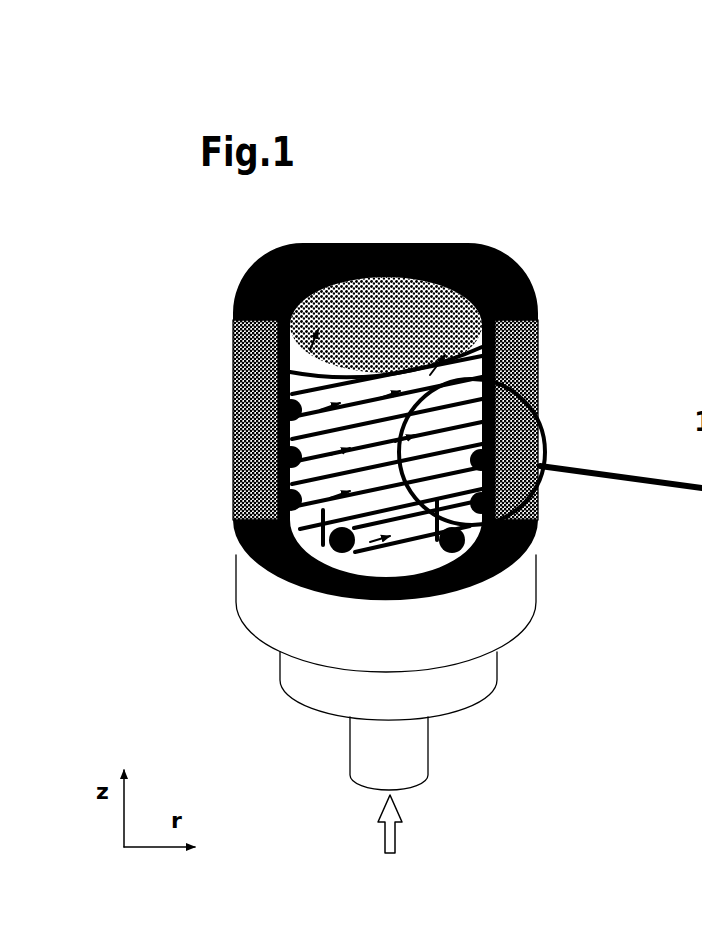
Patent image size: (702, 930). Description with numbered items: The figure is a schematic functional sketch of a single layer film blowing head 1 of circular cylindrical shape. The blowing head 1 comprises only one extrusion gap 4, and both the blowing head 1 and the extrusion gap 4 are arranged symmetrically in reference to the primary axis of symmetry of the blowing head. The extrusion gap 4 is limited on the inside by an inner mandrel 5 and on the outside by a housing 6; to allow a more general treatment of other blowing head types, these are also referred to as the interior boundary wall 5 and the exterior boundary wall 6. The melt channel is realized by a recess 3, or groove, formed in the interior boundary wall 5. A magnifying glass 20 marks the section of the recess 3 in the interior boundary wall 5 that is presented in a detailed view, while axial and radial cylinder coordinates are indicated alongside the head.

The film blowing head 1 is at (223, 220).
The recess 3 is at (297, 450).
The extrusion gap 4 is at (277, 365).
The inner mandrel 5 is at (407, 298).
The housing 6 is at (523, 352).
The magnifying glass 20 is at (588, 480).